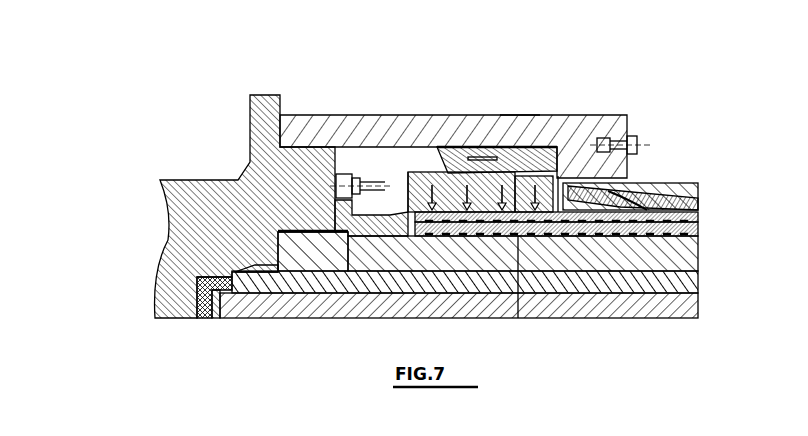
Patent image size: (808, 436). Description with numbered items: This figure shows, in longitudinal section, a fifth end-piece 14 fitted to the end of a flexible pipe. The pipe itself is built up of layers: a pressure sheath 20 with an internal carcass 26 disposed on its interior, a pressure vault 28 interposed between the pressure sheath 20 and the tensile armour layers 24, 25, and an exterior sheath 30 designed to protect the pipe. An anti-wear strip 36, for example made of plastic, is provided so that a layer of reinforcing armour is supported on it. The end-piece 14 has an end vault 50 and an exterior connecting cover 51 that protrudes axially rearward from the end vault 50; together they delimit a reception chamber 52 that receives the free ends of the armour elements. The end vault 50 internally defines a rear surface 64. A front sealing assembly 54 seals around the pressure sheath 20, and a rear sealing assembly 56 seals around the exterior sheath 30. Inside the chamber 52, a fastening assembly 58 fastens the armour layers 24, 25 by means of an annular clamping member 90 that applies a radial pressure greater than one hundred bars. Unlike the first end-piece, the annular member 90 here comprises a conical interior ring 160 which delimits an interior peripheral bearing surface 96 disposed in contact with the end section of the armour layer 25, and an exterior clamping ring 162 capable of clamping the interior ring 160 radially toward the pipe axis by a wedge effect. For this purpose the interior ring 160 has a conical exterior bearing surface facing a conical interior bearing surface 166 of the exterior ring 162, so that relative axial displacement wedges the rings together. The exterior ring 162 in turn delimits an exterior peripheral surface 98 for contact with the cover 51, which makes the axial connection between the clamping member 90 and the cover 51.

The end-piece 14 is at (702, 110).
The pressure sheath 20 is at (690, 282).
The tensile armour layer 24 is at (697, 228).
The tensile armour layer 25 is at (697, 210).
The internal carcass 26 is at (698, 318).
The pressure vault 28 is at (697, 253).
The exterior sheath 30 is at (697, 184).
The anti-wear strip 36 is at (605, 236).
The end vault 50 is at (190, 203).
The exterior connecting cover 51 is at (368, 114).
The reception chamber 52 is at (352, 163).
The front sealing assembly 54 is at (302, 276).
The rear sealing assembly 56 is at (635, 130).
The fastening assembly 58 is at (467, 142).
The rear surface 64 is at (433, 120).
The annular clamping member 90 is at (520, 133).
The interior peripheral bearing surface 96 is at (540, 233).
The exterior peripheral surface 98 is at (537, 144).
The conical interior ring 160 is at (427, 175).
The exterior clamping ring 162 is at (495, 157).
The conical interior bearing surface 166 is at (522, 236).